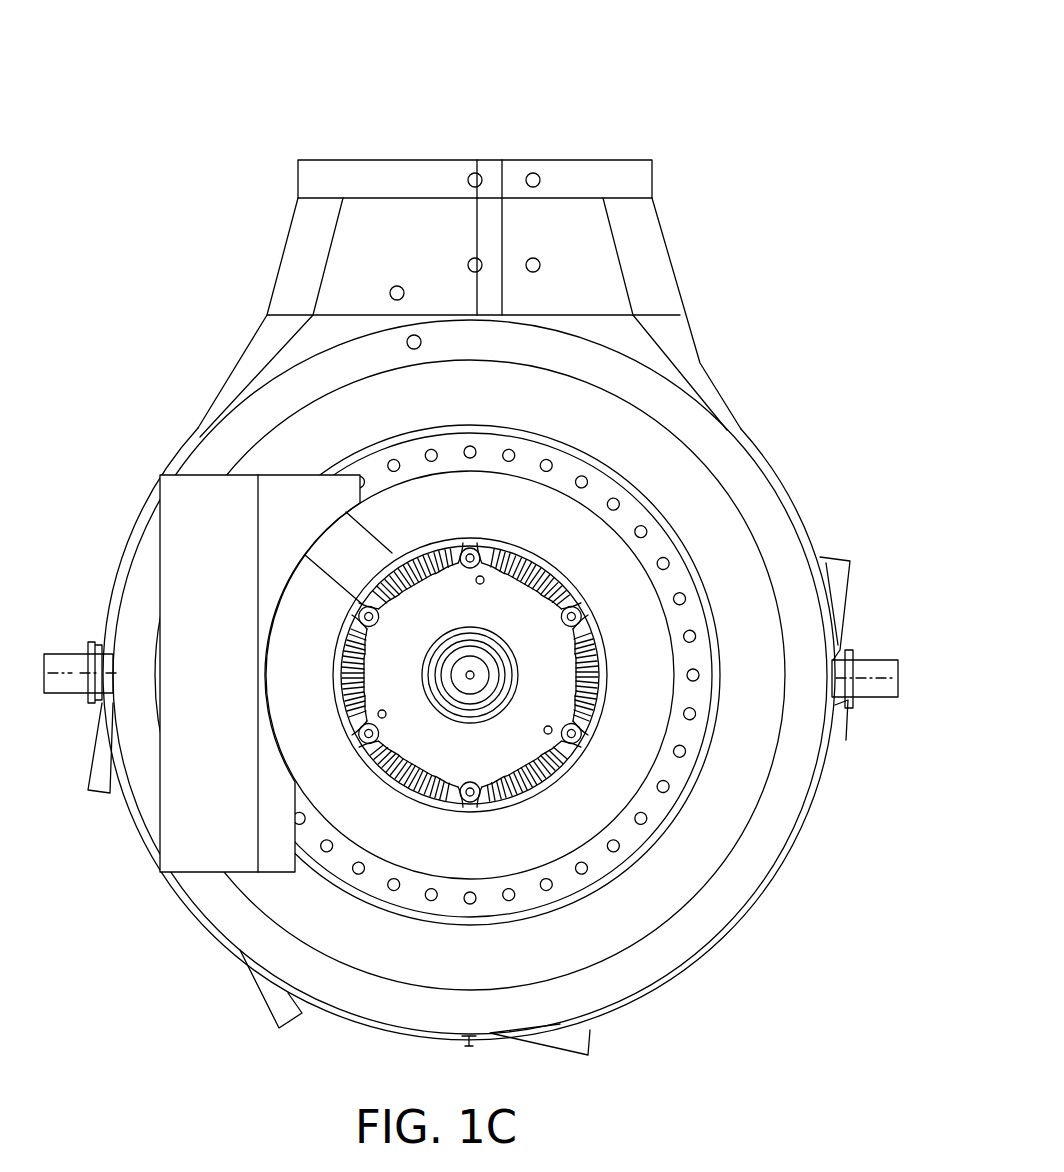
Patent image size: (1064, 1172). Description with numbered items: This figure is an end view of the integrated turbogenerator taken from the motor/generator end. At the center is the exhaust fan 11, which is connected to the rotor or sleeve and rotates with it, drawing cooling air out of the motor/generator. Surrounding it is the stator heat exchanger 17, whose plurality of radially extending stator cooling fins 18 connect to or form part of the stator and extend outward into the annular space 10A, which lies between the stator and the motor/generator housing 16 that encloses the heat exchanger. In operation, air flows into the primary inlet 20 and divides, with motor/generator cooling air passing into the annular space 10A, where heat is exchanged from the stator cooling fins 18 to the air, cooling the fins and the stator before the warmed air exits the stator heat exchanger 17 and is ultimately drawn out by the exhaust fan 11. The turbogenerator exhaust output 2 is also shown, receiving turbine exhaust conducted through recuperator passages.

The turbogenerator exhaust output 2 is at (622, 150).
The primary inlet 20 is at (470, 514).
The stator cooling fins 18 is at (550, 567).
The stator heat exchanger 17 is at (598, 638).
The annular space 10A is at (597, 680).
The motor/generator housing 16 is at (551, 790).
The exhaust fan 11 is at (445, 703).